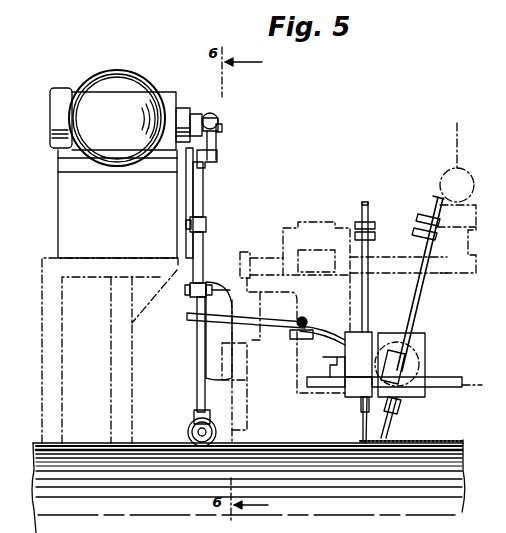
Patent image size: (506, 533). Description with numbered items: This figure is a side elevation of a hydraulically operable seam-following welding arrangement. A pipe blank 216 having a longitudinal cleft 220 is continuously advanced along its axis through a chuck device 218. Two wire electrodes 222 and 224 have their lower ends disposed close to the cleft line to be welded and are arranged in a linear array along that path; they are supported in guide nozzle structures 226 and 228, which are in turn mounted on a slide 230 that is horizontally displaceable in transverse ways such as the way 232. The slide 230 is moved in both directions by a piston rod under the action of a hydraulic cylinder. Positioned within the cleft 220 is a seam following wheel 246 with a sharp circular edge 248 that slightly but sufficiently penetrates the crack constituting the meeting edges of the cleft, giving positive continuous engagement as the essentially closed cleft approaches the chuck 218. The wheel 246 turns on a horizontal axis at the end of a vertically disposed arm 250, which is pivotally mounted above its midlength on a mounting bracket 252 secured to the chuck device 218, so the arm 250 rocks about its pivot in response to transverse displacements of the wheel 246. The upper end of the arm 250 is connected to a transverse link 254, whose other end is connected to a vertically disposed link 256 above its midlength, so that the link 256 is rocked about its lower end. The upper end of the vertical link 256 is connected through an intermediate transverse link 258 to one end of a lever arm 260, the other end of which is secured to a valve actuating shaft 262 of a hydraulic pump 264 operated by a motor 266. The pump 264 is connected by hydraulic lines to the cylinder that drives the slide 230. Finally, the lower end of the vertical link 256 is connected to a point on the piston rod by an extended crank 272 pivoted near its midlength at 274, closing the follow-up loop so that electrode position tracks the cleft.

The pipe blank 216 is at (463, 473).
The chuck device 218 is at (237, 433).
The longitudinal cleft 220 is at (302, 447).
The wire electrode 222 is at (361, 432).
The wire electrode 224 is at (389, 437).
The guide nozzle structure 226 is at (351, 394).
The guide nozzle structure 228 is at (408, 400).
The slide 230 is at (418, 367).
The transverse way 232 is at (405, 360).
The seam following wheel 246 is at (194, 425).
The sharp circular edge 248 is at (190, 438).
The arm 250 is at (197, 370).
The mounting bracket 252 is at (228, 308).
The transverse link 254 is at (188, 226).
The vertical link 256 is at (204, 200).
The intermediate transverse link 258 is at (203, 176).
The lever arm 260 is at (216, 120).
The valve actuating shaft 262 is at (222, 128).
The hydraulic pump 264 is at (184, 108).
The motor 266 is at (129, 84).
The extended crank 272 is at (331, 343).
The pivot 274 is at (304, 320).